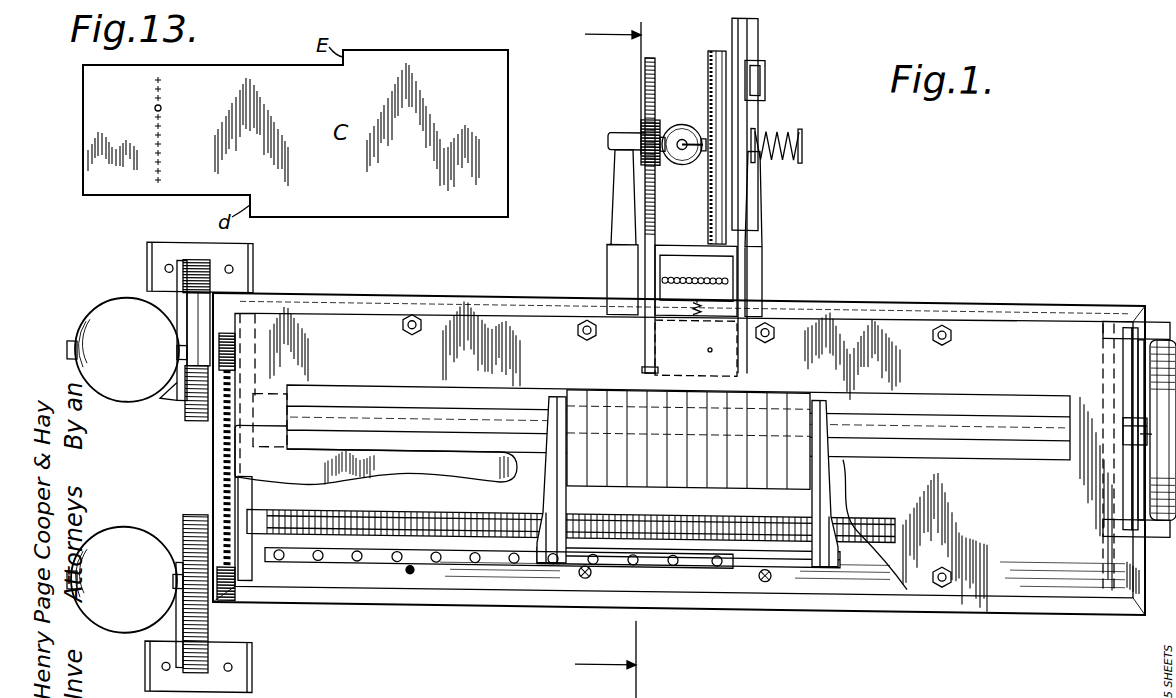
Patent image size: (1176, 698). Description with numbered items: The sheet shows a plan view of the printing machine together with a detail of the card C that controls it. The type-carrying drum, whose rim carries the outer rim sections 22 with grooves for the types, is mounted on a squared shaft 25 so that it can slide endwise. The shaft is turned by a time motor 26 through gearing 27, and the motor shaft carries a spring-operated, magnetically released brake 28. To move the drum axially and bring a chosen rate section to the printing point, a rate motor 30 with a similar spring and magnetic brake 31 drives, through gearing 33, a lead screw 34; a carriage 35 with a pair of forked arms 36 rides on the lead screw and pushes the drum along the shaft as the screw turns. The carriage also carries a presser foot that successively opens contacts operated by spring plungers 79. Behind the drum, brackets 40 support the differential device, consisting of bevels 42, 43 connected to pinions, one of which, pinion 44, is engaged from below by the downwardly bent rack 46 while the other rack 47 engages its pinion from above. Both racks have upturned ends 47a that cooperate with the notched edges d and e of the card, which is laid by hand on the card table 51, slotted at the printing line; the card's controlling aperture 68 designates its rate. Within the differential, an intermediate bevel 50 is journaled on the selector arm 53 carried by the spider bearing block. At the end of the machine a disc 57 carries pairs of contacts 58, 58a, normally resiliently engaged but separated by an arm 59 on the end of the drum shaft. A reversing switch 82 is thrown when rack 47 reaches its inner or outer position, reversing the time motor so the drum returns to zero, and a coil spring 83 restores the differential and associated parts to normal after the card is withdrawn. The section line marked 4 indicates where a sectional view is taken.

In FIG. 1, the section line 4- 4 is at (615, 359).
In FIG. 1, the outer rim sections 22 is at (595, 390).
In FIG. 1, the squared shaft 25 is at (457, 424).
In FIG. 1, the time motor 26 is at (127, 350).
In FIG. 1, the gearing 27 is at (224, 393).
In FIG. 1, the brake 28 is at (193, 308).
In FIG. 1, the rate motor 30 is at (125, 580).
In FIG. 1, the spring and magnetic brake 31 is at (197, 512).
In FIG. 1, the gearing 33 is at (235, 583).
In FIG. 1, the lead screw 34 is at (402, 505).
In FIG. 1, the carriage 35 is at (748, 556).
In FIG. 1, the forked arms 36 is at (812, 488).
In FIG. 1, the brackets 40 is at (758, 206).
In FIG. 1, the bevel 42 is at (643, 118).
In FIG. 1, the bevel 43 is at (695, 146).
In FIG. 1, the pinion 44 is at (608, 132).
In FIG. 1, the rack 46 is at (645, 170).
In FIG. 1, the rack 47 is at (745, 122).
In FIG. 1, the upturned ends 47a is at (648, 366).
In FIG. 1, the intermediate bevel 50 is at (680, 115).
In FIG. 1, the card table 51 is at (921, 477).
In FIG. 1, the selector arm 53 is at (692, 146).
In FIG. 1, the disc 57 is at (1160, 372).
In FIG. 1, the contacts 58 is at (1147, 480).
In FIG. 1, the contacts 58a is at (1160, 487).
In FIG. 1, the arm 59 is at (1125, 420).
In FIG. 13, the controlling aperture 68 is at (161, 108).
In FIG. 1, the spring plungers 79 is at (436, 559).
In FIG. 1, the reversing switch 82 is at (762, 72).
In FIG. 1, the coil spring 83 is at (801, 130).